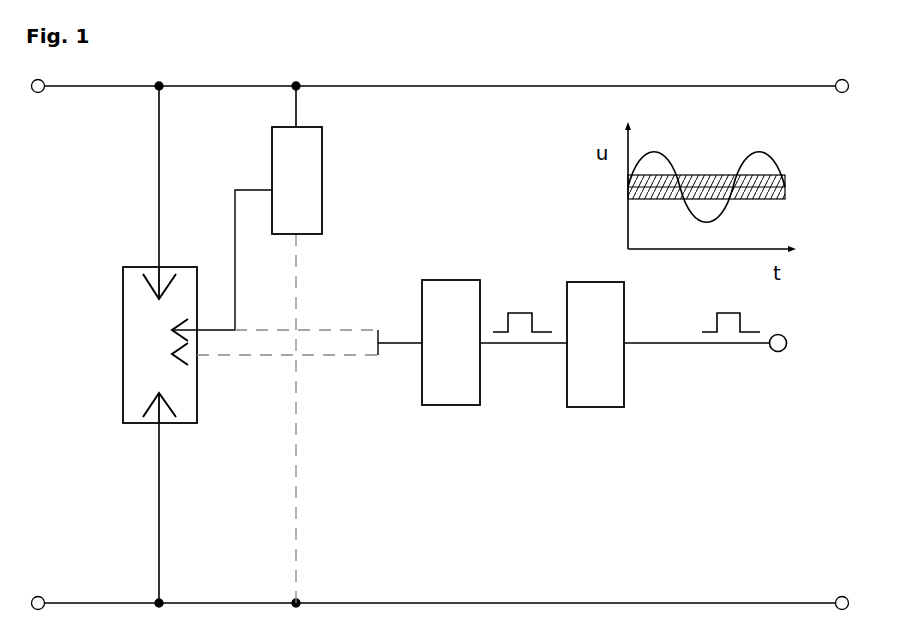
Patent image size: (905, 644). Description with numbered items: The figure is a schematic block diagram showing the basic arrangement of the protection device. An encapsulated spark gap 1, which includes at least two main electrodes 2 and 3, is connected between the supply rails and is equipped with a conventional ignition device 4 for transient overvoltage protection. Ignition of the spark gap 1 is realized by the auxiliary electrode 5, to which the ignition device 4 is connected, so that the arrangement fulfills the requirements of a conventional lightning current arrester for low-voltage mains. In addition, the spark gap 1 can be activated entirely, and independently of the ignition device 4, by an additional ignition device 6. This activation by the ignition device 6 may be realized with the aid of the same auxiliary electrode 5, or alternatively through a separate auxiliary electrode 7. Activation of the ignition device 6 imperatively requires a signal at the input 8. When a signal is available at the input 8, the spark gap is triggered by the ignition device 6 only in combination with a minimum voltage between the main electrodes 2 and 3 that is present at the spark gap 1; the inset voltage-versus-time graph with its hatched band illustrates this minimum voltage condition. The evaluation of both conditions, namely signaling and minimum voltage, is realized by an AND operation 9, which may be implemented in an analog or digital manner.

The encapsulated spark gap 1 is at (113, 342).
The main electrode 2 is at (149, 270).
The main electrode 3 is at (153, 412).
The ignition device 4 is at (278, 228).
The auxiliary electrode 5 is at (188, 320).
The additional ignition device 6 is at (451, 342).
The separate auxiliary electrode 7 is at (190, 362).
The input 8 is at (788, 357).
The AND operation 9 is at (588, 409).